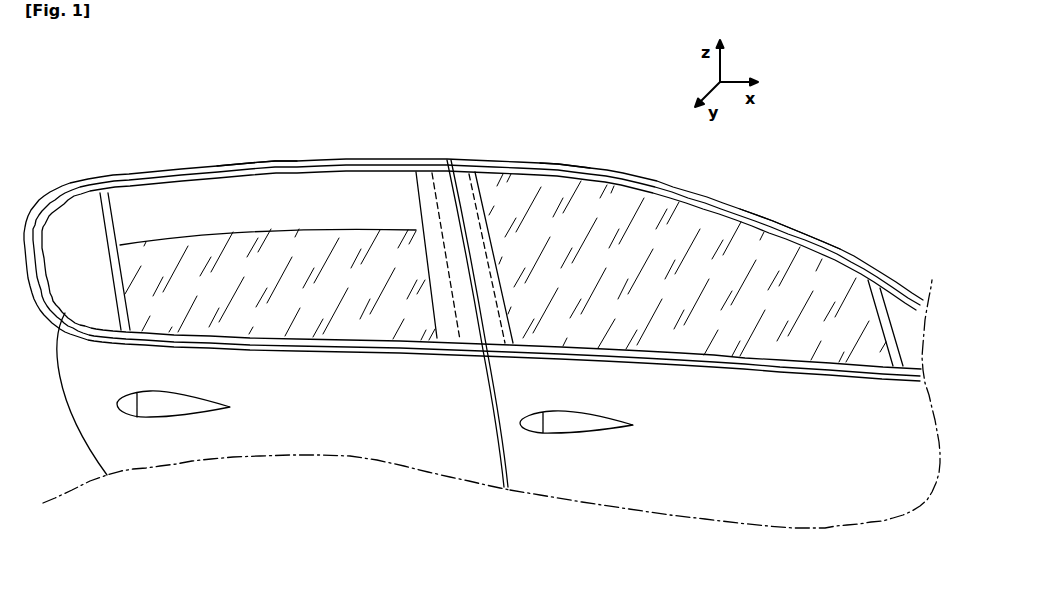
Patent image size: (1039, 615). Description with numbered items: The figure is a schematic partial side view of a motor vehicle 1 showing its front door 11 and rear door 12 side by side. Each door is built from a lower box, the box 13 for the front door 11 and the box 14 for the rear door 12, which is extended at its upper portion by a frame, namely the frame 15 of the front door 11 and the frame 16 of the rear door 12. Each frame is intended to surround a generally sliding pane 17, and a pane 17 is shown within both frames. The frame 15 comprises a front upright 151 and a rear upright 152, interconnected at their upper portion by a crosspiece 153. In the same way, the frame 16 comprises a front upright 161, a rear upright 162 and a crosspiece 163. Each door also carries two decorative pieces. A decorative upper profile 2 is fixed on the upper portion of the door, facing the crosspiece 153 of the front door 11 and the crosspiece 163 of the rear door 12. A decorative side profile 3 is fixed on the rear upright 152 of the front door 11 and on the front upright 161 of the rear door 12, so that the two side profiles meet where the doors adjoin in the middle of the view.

The motor vehicle 1 is at (373, 107).
The decorative upper profile 2 is at (320, 164).
The decorative side profile 3 is at (448, 337).
The front door 11 is at (696, 545).
The rear door 12 is at (314, 502).
The box 13 is at (740, 455).
The box 14 is at (328, 420).
The frame 15 is at (778, 197).
The frame 16 is at (195, 147).
The pane 17 is at (280, 288).
The front upright 151 is at (882, 306).
The rear upright 152 is at (466, 197).
The crosspiece 153 is at (561, 161).
The front upright 161 is at (443, 196).
The rear upright 162 is at (106, 212).
The crosspiece 163 is at (256, 163).